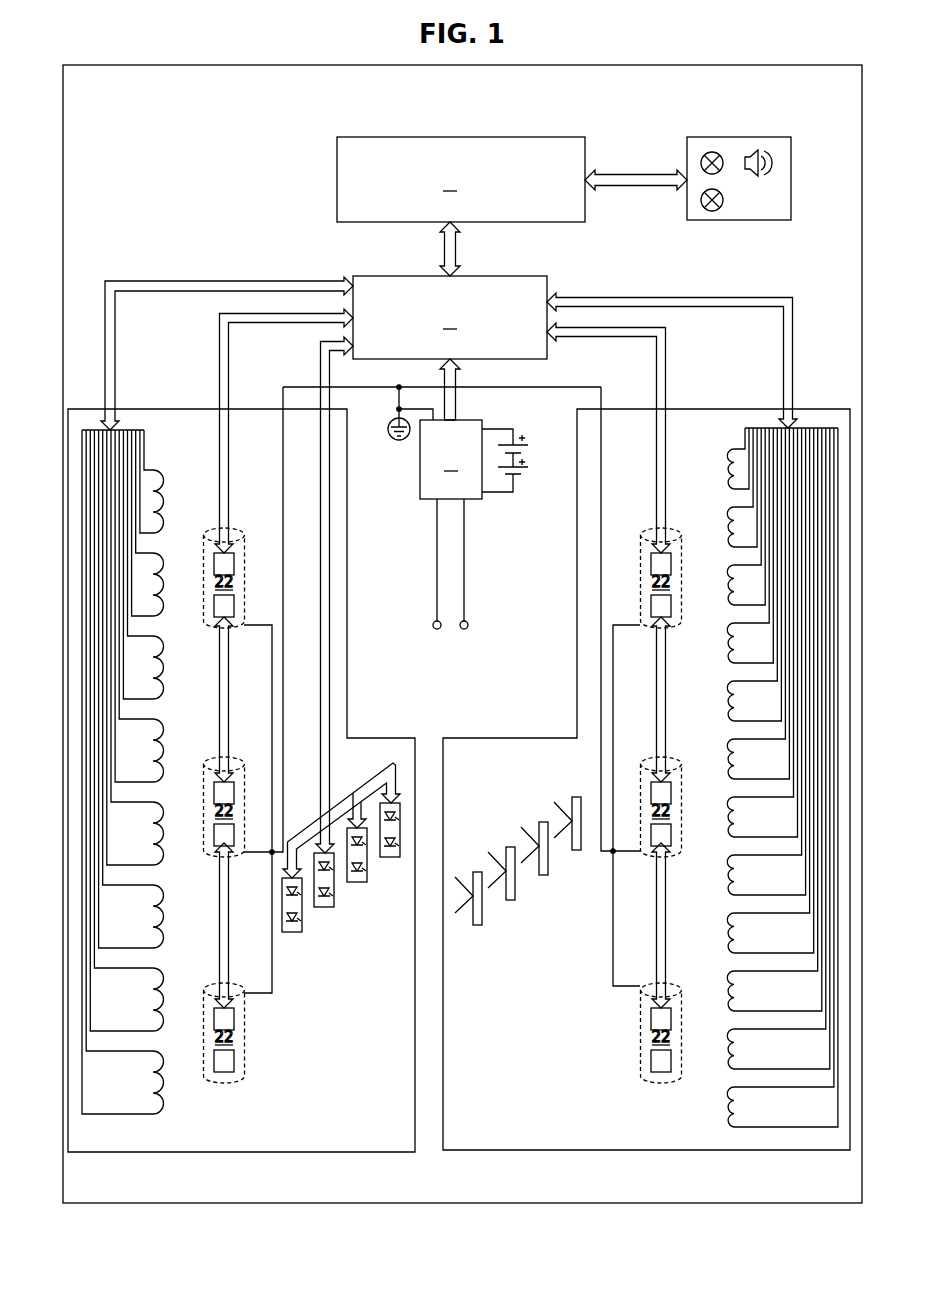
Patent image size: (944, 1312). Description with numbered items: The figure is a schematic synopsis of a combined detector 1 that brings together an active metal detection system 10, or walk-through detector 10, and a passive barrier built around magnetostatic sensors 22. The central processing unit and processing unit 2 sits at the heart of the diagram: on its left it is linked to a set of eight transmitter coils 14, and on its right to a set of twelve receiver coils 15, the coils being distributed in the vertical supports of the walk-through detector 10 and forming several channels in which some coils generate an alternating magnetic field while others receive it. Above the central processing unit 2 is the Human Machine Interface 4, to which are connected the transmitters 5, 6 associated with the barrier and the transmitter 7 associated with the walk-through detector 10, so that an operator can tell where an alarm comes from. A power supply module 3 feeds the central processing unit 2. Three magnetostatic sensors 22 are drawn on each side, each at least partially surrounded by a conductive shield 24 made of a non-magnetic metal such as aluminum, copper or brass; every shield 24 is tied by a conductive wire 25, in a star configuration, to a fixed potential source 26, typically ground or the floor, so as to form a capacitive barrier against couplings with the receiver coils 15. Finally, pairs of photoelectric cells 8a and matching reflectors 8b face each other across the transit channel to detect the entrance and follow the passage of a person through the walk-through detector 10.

The combined detector 1 is at (684, 52).
The central processing unit and processing unit 2 is at (450, 317).
The power supply module 3 is at (474, 494).
The Human Machine Interface 4 is at (512, 206).
The transmitter 5 is at (712, 212).
The transmitter 6 is at (712, 138).
The transmitter 7 is at (758, 138).
The photoelectric cells 8a is at (292, 932).
The reflectors 8b is at (477, 925).
The active metal detection system 10 is at (232, 1152).
The transmitter coils 14 is at (156, 473).
The receiver coils 15 is at (728, 457).
The magnetostatic sensor 22 is at (442, 690).
The conductive shield 24 is at (247, 582).
The conductive wire 25 is at (353, 389).
The fixed potential source 26 is at (399, 440).